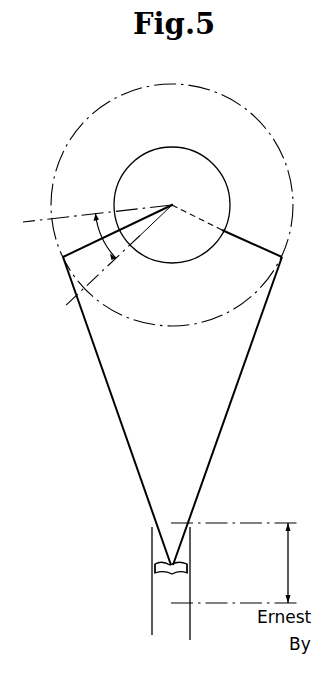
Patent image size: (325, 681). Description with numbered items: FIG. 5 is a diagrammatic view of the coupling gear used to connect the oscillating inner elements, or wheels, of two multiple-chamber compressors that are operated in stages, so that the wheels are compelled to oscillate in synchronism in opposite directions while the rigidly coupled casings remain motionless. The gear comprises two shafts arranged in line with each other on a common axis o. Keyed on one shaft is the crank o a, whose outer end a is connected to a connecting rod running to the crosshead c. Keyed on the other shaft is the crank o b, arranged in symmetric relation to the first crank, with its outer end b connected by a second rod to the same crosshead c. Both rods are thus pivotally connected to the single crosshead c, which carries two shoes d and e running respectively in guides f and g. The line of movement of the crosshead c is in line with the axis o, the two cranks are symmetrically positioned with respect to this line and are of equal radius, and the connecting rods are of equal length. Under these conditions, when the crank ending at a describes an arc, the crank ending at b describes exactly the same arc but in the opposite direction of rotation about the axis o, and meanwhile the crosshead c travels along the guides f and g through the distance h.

The common axis o is at (172, 205).
The crank pin of crank oa a is at (108, 235).
The crank pin of crank ob b is at (234, 237).
The crosshead c is at (172, 422).
The shoe d is at (188, 566).
The shoe e is at (154, 570).
The guide f is at (198, 619).
The guide g is at (151, 625).
The crosshead travel distance h is at (235, 563).